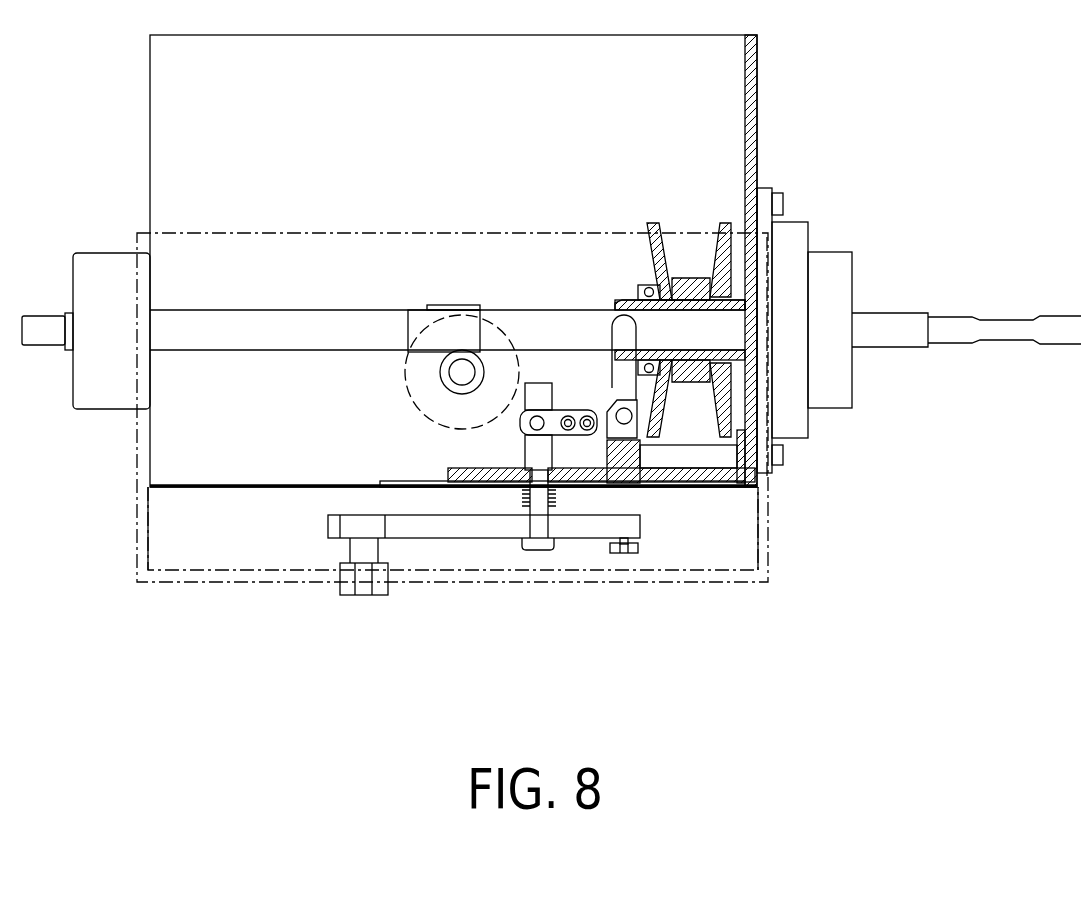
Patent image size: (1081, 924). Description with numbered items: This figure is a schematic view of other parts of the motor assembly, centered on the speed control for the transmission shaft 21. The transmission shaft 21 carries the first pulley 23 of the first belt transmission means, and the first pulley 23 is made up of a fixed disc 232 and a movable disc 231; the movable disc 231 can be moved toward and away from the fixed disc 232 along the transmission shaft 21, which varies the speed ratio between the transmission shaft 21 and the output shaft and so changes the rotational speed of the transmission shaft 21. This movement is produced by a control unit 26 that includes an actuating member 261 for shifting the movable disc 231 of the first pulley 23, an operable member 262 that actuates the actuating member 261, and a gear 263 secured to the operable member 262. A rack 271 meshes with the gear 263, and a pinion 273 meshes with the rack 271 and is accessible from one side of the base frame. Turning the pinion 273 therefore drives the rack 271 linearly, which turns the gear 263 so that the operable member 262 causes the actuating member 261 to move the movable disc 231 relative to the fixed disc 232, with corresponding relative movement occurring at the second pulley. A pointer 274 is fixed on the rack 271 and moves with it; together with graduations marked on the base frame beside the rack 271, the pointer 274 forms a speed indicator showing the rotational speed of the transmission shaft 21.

The transmission shaft 21 is at (223, 338).
The first pulley 23 is at (740, 264).
The movable disc 231 is at (656, 250).
The fixed disc 232 is at (727, 243).
The control unit 26 is at (537, 420).
The actuating member 261 is at (607, 397).
The operable member 262 is at (543, 452).
The gear 263 is at (513, 525).
The rack 271 is at (410, 525).
The pinion 273 is at (338, 585).
The pointer 274 is at (638, 548).